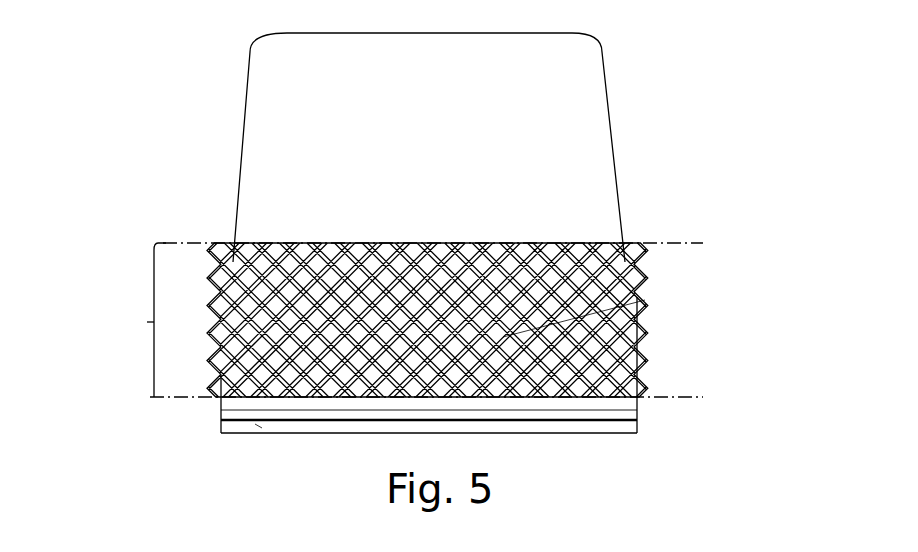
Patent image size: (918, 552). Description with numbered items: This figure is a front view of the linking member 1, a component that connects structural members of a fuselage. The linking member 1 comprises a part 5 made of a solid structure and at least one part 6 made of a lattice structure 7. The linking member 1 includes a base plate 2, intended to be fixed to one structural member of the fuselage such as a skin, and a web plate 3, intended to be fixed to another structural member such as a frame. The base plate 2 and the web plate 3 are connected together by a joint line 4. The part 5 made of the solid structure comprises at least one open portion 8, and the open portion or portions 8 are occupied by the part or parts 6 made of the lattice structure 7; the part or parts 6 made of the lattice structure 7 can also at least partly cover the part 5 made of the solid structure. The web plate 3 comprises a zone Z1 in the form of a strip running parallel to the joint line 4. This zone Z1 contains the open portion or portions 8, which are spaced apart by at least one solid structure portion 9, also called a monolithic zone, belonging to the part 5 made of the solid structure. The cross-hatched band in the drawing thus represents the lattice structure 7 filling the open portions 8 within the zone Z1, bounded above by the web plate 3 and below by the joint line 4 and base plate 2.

The linking member 1 is at (645, 186).
The base plate 2 is at (620, 433).
The web plate 3 is at (307, 123).
The joint line 4 is at (623, 407).
The part made of a solid structure 5 is at (547, 127).
The part made of a lattice structure 6 is at (235, 265).
The lattice structure 7 is at (645, 302).
The open portion 8 is at (627, 252).
The solid structure portion 9 is at (358, 241).
The zone Z1 is at (407, 320).